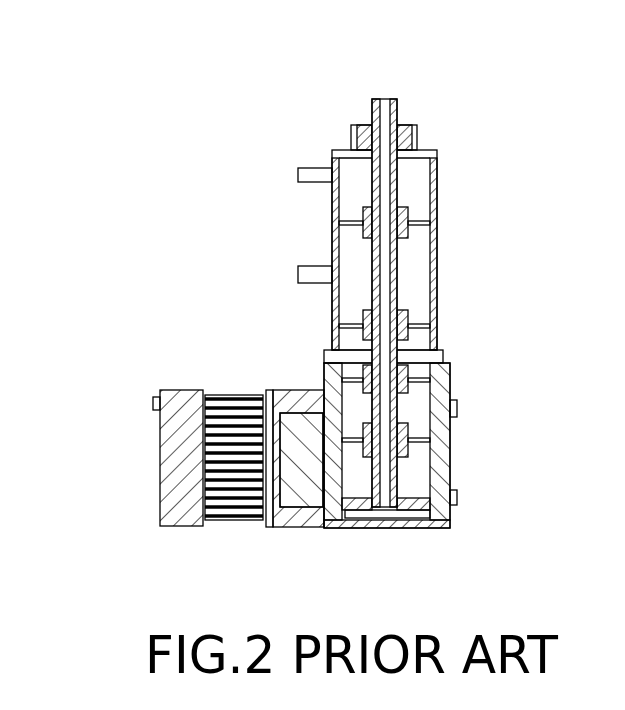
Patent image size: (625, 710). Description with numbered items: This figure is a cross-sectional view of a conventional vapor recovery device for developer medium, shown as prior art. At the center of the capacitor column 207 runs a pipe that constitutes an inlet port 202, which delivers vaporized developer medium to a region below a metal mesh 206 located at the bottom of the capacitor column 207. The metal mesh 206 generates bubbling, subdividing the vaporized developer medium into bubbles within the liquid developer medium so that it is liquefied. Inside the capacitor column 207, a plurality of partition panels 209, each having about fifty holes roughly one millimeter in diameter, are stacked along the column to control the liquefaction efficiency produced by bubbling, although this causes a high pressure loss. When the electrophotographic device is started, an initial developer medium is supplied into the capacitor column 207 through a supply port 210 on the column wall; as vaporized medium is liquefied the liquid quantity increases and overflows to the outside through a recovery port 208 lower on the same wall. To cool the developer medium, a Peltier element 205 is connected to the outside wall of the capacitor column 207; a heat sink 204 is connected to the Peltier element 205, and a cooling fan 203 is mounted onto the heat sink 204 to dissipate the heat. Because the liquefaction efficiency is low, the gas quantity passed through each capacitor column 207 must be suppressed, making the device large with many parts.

The inlet port 202 is at (387, 99).
The cooling fan 203 is at (160, 455).
The heat sink 204 is at (233, 397).
The Peltier element 205 is at (272, 517).
The metal mesh 206 is at (413, 510).
The capacitor column 207 is at (433, 182).
The recovery port 208 is at (323, 268).
The partition panel 209 is at (413, 225).
The supply port 210 is at (320, 165).